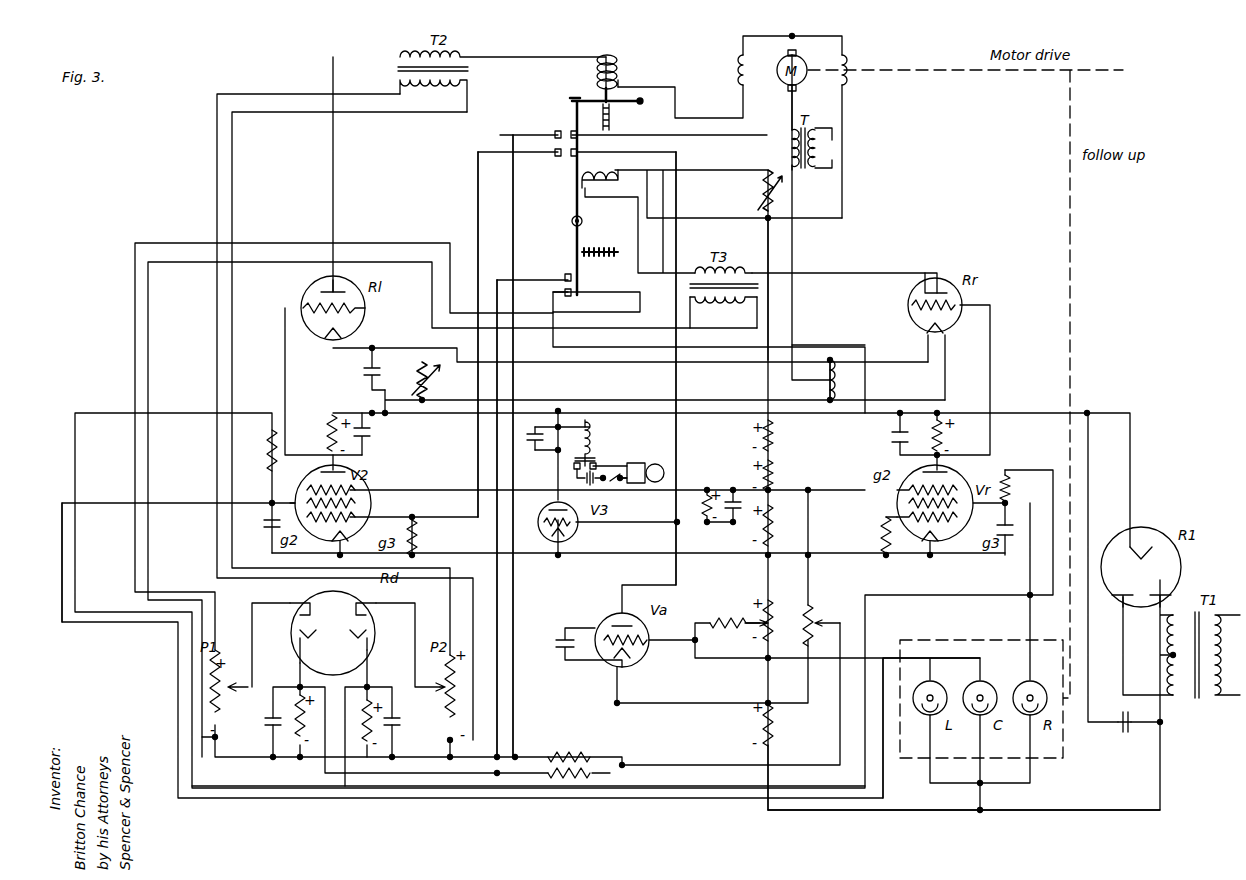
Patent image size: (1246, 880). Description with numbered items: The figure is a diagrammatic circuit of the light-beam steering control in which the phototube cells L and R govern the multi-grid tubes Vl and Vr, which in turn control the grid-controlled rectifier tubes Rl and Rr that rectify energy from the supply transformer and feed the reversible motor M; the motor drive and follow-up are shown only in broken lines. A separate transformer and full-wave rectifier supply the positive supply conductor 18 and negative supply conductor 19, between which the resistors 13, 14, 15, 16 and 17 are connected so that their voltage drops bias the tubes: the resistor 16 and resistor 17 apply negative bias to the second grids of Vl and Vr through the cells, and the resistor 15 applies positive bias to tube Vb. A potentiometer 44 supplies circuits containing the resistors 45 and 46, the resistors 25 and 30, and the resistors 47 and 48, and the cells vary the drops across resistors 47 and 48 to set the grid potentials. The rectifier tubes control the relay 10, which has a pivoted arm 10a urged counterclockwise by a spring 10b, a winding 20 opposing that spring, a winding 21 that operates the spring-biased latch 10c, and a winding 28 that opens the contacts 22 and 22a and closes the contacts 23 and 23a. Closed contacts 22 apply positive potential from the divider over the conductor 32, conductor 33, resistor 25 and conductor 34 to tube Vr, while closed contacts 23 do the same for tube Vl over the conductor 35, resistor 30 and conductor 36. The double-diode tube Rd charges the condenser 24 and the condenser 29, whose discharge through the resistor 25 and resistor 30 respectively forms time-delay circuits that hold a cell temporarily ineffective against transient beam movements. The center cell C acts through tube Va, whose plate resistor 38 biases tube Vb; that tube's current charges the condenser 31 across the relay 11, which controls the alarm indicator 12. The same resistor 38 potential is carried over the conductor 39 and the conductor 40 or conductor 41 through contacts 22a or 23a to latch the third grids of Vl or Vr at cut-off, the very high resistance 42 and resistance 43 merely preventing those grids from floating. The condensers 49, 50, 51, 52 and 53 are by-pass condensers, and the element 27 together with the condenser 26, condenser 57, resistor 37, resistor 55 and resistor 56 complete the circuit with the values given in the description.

The relay 10 is at (552, 221).
The pivoted arm 10a is at (590, 242).
The spring 10b is at (600, 257).
The spring-biased latch 10c is at (612, 110).
The relay 11 is at (592, 437).
The alarm indicator 12 is at (636, 463).
The resistor 13 is at (774, 438).
The resistor 14 is at (774, 475).
The resistor 15 is at (774, 519).
The resistor 16 is at (774, 620).
The resistor 17 is at (774, 726).
The positive supply conductor 18 is at (818, 416).
The negative supply conductor 19 is at (895, 810).
The winding 20 is at (330, 426).
The winding 21 is at (620, 72).
The relay contacts 22 is at (556, 131).
The relay contacts 22a is at (557, 156).
The relay contacts 23 is at (566, 276).
The relay contacts 23a is at (575, 302).
The condenser 24 is at (397, 728).
The resistor 25 is at (362, 735).
The condenser 26 is at (370, 440).
The resistor 27 is at (948, 440).
The winding 28 is at (615, 172).
The condenser 29 is at (265, 728).
The resistor 30 is at (302, 742).
The condenser 31 is at (530, 445).
The conductor 32 is at (770, 318).
The conductor 33 is at (515, 386).
The conductor 34 is at (680, 786).
The conductor 35 is at (499, 592).
The conductor 36 is at (64, 558).
The resistor 37 is at (772, 196).
The resistor 38 is at (707, 510).
The conductor 39 is at (678, 433).
The conductor 40 is at (479, 252).
The conductor 41 is at (838, 347).
The resistance 42 is at (420, 538).
The resistance 43 is at (880, 538).
The potentiometer 44 is at (822, 618).
The resistor 45 is at (572, 756).
The resistor 46 is at (600, 776).
The resistor 47 is at (266, 450).
The resistor 48 is at (1012, 488).
The by-pass condenser 49 is at (264, 528).
The by-pass condenser 50 is at (735, 512).
The by-pass condenser 51 is at (892, 440).
The by-pass condenser 52 is at (1010, 538).
The by-pass condenser 53 is at (556, 642).
The resistor 55 is at (722, 618).
The resistor 56 is at (430, 384).
The condenser 57 is at (364, 370).